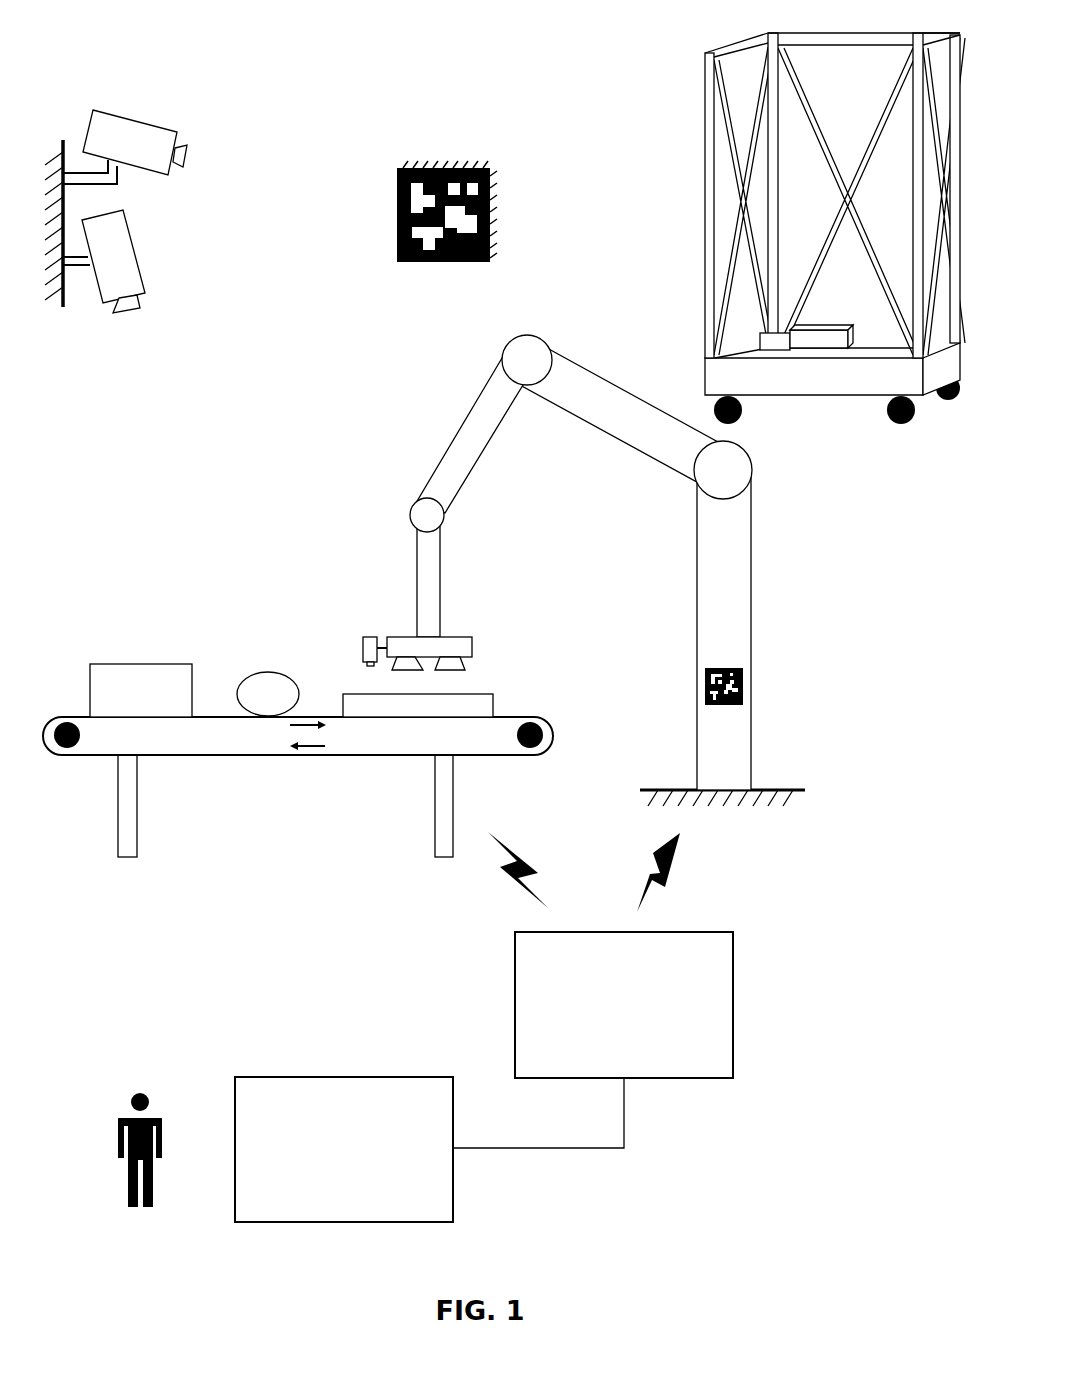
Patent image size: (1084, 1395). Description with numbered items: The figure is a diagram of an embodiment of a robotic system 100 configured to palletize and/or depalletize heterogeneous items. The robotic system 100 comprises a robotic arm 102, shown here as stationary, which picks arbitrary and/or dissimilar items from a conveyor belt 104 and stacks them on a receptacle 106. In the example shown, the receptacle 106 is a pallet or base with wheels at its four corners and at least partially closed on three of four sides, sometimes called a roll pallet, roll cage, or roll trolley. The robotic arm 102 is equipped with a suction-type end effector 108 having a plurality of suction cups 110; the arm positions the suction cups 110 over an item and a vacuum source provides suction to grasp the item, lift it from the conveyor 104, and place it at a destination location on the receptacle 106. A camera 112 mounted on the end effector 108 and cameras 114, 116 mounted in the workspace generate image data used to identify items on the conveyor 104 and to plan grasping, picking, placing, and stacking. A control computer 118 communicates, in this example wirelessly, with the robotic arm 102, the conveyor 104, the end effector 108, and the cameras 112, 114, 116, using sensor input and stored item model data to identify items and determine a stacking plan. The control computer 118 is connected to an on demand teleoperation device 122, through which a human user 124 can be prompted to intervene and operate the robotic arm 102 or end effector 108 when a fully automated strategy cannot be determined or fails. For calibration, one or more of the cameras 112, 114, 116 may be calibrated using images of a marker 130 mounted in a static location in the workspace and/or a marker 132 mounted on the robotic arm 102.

The robotic system 100 is at (148, 76).
The robotic arm 102 is at (752, 635).
The conveyor belt 104 is at (223, 755).
The receptacle 106 is at (827, 398).
The end effector 108 is at (473, 648).
The suction cups 110 is at (463, 662).
The camera 112 is at (362, 648).
The camera 114 is at (149, 174).
The camera 116 is at (143, 276).
The control computer 118 is at (735, 990).
The on demand teleoperation device 122 is at (320, 1077).
The human user 124 is at (140, 1091).
The marker 130 is at (440, 262).
The marker 132 is at (743, 690).